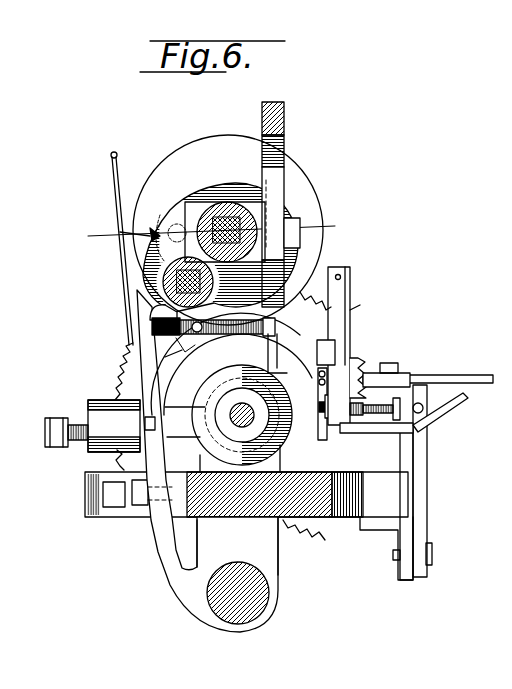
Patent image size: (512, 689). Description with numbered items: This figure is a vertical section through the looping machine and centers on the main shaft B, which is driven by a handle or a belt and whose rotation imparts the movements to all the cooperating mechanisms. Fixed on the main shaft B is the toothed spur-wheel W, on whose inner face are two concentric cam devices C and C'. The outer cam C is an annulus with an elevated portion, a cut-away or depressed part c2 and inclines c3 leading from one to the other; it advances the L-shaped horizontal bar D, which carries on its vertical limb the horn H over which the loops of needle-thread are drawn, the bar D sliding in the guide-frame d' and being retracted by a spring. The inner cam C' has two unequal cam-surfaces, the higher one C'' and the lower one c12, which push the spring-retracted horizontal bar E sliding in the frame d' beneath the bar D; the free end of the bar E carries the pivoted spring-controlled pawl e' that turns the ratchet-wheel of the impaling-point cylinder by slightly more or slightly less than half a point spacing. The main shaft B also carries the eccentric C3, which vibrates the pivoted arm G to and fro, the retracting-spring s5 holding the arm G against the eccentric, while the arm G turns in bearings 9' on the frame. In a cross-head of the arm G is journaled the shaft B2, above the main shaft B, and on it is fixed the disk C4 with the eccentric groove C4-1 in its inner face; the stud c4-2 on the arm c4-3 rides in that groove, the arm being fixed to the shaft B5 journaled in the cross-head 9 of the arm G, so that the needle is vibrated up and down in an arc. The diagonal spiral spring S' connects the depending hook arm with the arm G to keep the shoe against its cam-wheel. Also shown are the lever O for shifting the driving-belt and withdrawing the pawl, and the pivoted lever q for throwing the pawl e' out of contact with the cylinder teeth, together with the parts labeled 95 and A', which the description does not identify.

The disk C4 is at (237, 150).
The eccentric groove C4-1 is at (212, 196).
The stud c4-2 is at (163, 226).
The arm c4-3 is at (121, 234).
The cross-head 9 is at (155, 278).
The shaft B5 is at (168, 283).
The vertical bar 95 is at (287, 141).
The horizontal shaft B2 is at (301, 231).
The horn H is at (341, 277).
The cam device C is at (315, 298).
The L-shaped horizontal bar D is at (360, 312).
The cam device C' is at (354, 356).
The guide-frame d' is at (349, 350).
The spiral spring S' is at (143, 319).
The inclines c3 is at (152, 340).
The toothed spur-wheel W is at (128, 345).
The depressed part c2 is at (165, 357).
The pivoted arm G is at (118, 392).
The retracting-spring s5 is at (240, 336).
The cam-surface C'' is at (225, 364).
The cam or eccentric C3 is at (208, 388).
The main shaft B is at (252, 408).
The pawl e' is at (317, 388).
The horizontal bar E is at (326, 412).
The cam-surface c12 is at (312, 460).
The lever O is at (488, 384).
The pivoted lever q is at (452, 410).
The frame plate A' is at (237, 546).
The bearings 9' is at (249, 593).